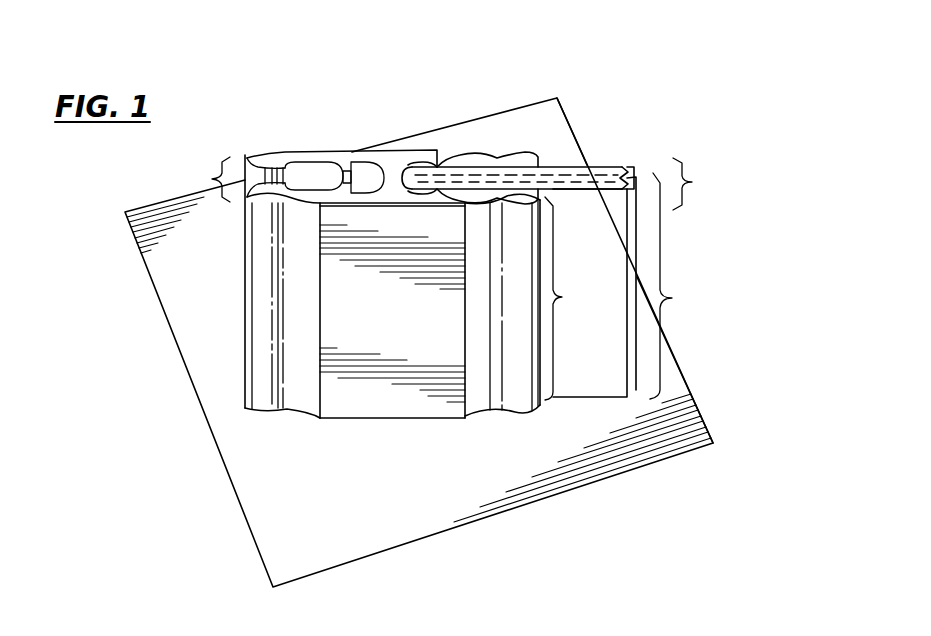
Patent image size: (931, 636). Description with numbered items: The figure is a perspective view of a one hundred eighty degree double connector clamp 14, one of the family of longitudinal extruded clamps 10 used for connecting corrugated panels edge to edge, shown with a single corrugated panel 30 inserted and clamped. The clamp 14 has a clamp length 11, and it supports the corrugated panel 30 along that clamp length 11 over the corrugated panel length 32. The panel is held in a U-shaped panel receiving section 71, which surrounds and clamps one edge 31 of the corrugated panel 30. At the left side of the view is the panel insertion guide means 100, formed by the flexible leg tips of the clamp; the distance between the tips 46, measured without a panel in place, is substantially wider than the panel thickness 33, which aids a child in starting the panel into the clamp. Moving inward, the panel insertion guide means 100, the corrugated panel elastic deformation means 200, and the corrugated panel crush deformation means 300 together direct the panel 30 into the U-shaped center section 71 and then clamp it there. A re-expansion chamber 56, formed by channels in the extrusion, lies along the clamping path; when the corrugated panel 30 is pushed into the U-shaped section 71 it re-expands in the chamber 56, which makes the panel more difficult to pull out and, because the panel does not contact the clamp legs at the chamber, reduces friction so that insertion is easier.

The clamp 10 is at (345, 439).
The clamp length 11 is at (563, 297).
The 180 degree double connector clamp 14 is at (388, 322).
The corrugated panel 30 is at (583, 213).
The edge 31 is at (398, 175).
The corrugated panel length 32 is at (674, 299).
The panel thickness 33 is at (693, 182).
The distance between the tips 46 is at (208, 176).
The re-expansion chamber 56 is at (317, 170).
The U-shaped panel receiving section 71 is at (470, 163).
The panel insertion guide means 100 is at (245, 175).
The corrugated panel elastic deformation means 200 is at (520, 173).
The corrugated panel crush deformation means 300 is at (440, 167).